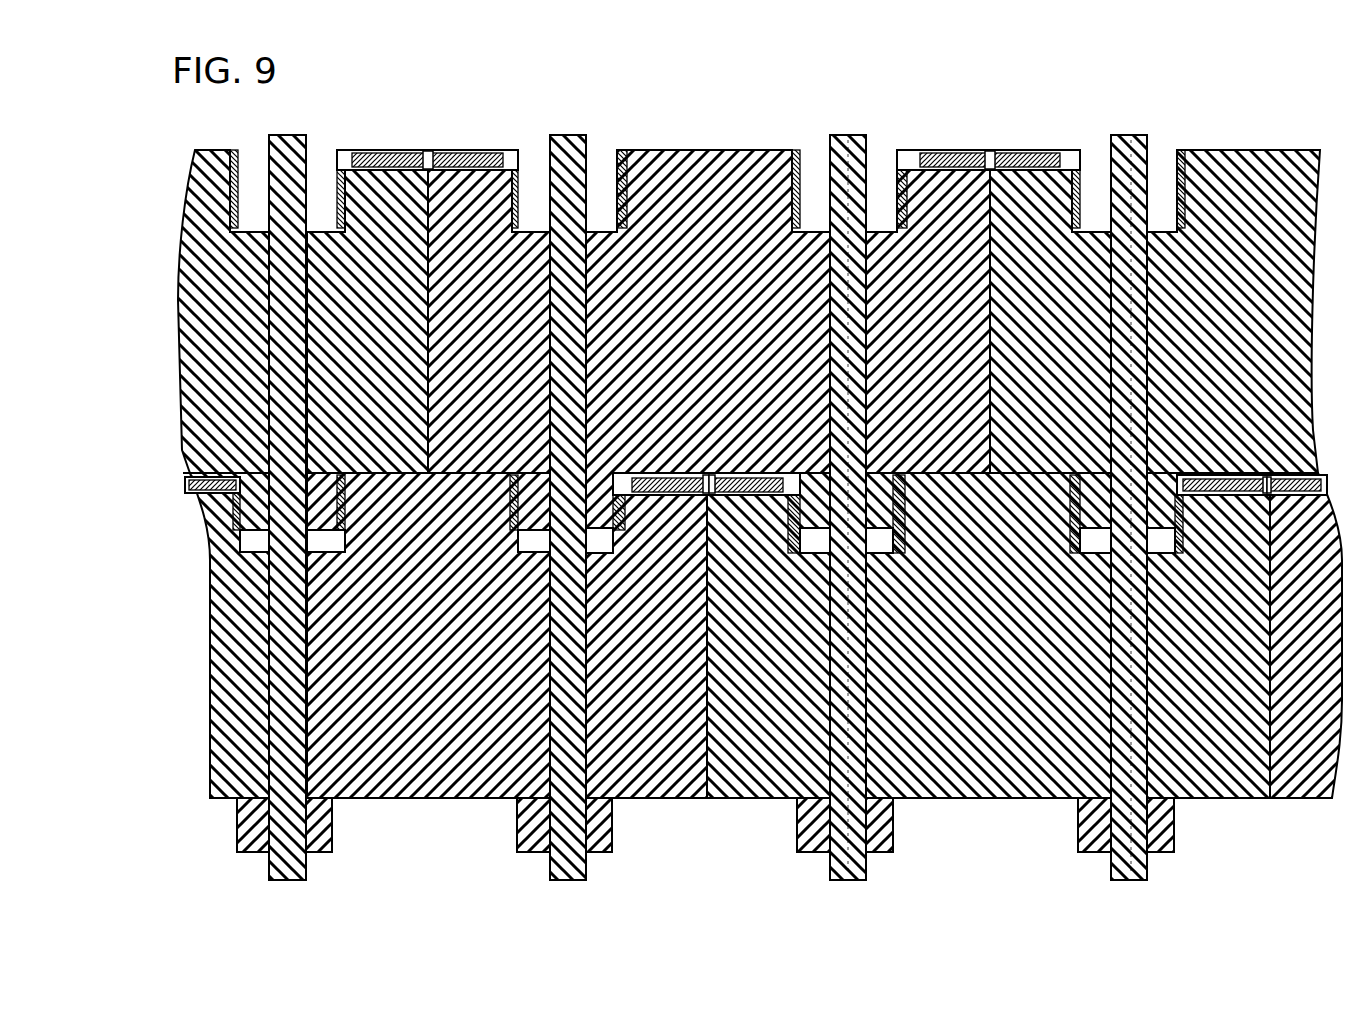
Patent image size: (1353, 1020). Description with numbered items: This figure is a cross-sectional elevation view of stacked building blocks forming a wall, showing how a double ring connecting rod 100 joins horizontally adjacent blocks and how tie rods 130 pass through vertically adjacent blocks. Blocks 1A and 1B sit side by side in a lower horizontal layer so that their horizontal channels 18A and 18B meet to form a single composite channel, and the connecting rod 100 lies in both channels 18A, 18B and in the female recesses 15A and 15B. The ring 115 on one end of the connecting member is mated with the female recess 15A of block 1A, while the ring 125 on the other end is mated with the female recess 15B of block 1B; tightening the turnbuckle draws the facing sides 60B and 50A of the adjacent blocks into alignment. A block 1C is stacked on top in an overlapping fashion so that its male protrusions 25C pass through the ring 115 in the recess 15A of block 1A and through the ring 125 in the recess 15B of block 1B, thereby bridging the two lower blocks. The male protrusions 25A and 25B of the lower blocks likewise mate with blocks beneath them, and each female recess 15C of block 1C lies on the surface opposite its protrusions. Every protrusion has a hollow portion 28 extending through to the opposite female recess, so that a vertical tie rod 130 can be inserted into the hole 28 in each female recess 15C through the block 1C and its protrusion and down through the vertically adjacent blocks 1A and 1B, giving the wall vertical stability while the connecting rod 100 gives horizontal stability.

The block 1A is at (360, 798).
The block 1B is at (1200, 790).
The block 1C is at (706, 160).
The hollow portion 28 is at (535, 148).
The male protrusion 25A is at (243, 822).
The male protrusion 25B is at (887, 842).
The male protrusion 25C is at (538, 520).
The vertical tie rod 130 is at (303, 875).
The female recess 15C is at (600, 163).
The female recess 15A is at (613, 540).
The female recess 15B is at (800, 543).
The connecting rod 100 is at (348, 148).
The horizontal channel 18A is at (700, 477).
The horizontal channel 18B is at (728, 460).
The ring 115 is at (625, 528).
The ring 125 is at (903, 510).
The side 60B is at (710, 660).
The side 50A is at (740, 669).